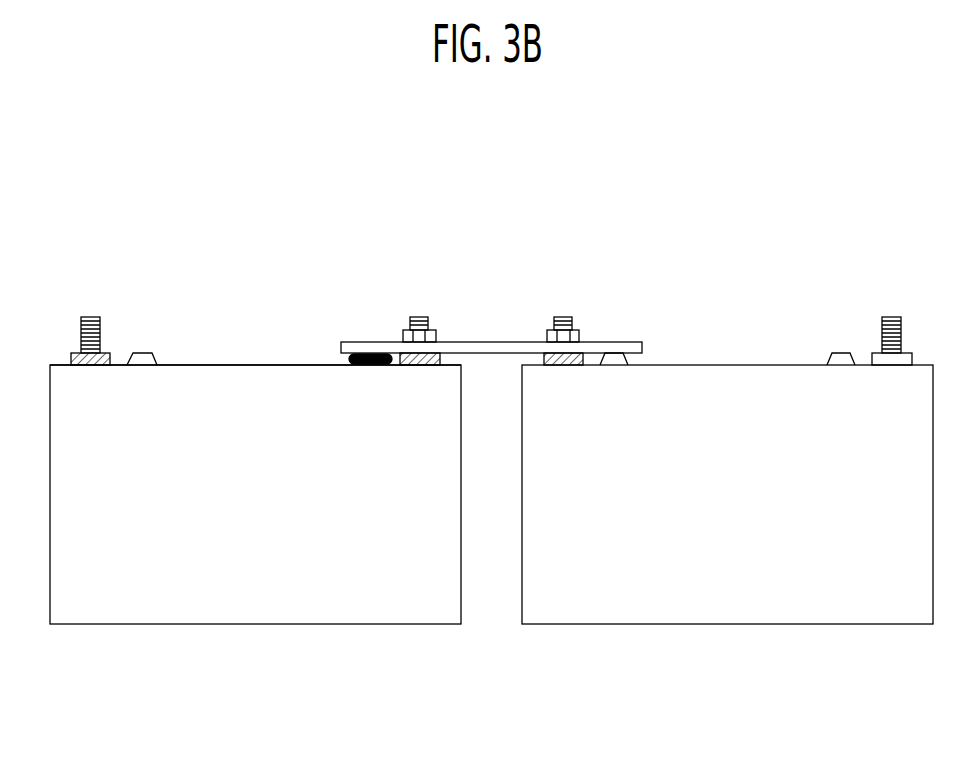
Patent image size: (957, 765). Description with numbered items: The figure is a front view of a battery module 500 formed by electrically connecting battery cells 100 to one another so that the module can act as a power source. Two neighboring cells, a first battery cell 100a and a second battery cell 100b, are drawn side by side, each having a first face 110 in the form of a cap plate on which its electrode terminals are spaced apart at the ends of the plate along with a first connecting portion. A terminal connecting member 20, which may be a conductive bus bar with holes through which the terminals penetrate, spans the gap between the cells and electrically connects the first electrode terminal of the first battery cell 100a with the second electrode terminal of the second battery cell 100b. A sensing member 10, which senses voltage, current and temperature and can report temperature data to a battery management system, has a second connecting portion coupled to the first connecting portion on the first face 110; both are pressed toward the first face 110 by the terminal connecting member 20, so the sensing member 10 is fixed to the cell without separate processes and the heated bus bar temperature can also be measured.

The battery module 500 is at (878, 156).
The battery cell 100 is at (491, 565).
The first battery cell 100a is at (229, 647).
The second battery cell 100b is at (727, 542).
The first face 110 is at (237, 365).
The terminal connecting member 20 is at (490, 342).
The sensing member 10 is at (320, 344).